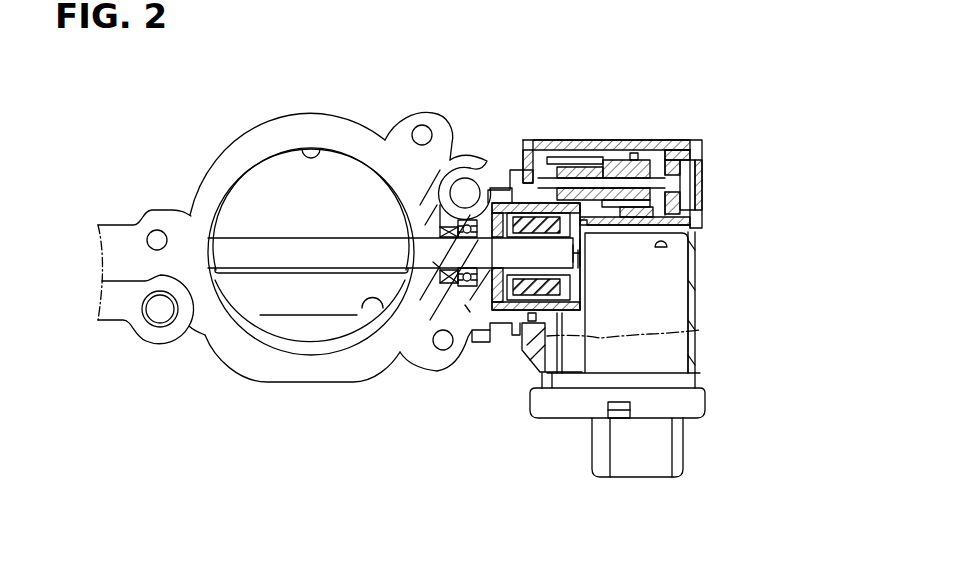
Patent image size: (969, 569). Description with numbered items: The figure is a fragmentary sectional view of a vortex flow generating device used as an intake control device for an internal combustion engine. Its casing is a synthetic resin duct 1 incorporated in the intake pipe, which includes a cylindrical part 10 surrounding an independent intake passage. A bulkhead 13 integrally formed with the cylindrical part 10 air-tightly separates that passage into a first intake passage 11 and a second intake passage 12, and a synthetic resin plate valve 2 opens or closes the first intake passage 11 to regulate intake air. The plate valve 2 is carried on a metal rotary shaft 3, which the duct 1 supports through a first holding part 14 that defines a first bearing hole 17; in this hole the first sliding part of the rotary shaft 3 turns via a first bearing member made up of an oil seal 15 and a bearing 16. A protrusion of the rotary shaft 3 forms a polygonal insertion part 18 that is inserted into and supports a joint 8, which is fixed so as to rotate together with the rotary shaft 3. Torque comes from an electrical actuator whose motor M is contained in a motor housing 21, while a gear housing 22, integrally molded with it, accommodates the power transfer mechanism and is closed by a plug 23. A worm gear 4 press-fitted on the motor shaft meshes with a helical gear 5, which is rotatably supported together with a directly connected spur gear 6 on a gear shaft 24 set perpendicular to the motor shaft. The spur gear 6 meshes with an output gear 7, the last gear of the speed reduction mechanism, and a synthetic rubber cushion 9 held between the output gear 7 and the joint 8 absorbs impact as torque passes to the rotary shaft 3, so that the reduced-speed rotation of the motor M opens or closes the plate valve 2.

The duct 1 is at (201, 155).
The cylindrical part 10 is at (230, 155).
The plate valve 2 is at (290, 178).
The first intake passage 11 is at (317, 157).
The rotary shaft 3 is at (420, 236).
The bulkhead 13 is at (270, 273).
The second intake passage 12 is at (362, 302).
The oil seal 15 is at (433, 250).
The bearing 16 is at (462, 226).
The first bearing hole 17 is at (434, 262).
The first holding part 14 is at (466, 318).
The cushion 9 is at (520, 290).
The output gear 7 is at (513, 203).
The gear housing 22 is at (597, 140).
The plug 23 is at (698, 153).
The gear shaft 24 is at (680, 183).
The spur gear 6 is at (563, 160).
The helical gear 5 is at (620, 160).
The worm gear 4 is at (655, 215).
The motor M is at (673, 295).
The motor housing 21 is at (692, 317).
The insertion part 18 is at (573, 253).
The joint 8 is at (587, 280).